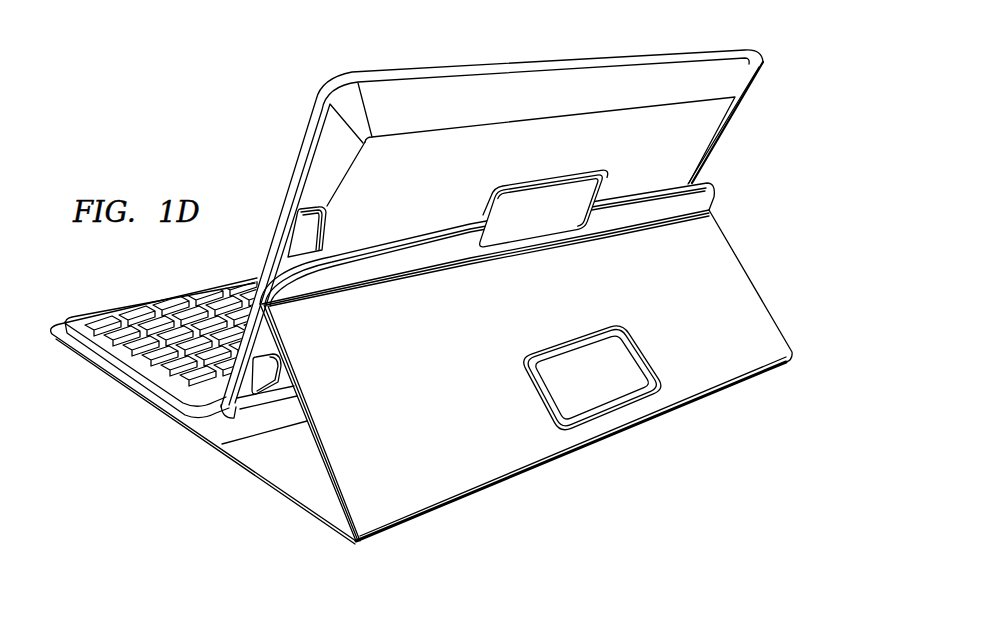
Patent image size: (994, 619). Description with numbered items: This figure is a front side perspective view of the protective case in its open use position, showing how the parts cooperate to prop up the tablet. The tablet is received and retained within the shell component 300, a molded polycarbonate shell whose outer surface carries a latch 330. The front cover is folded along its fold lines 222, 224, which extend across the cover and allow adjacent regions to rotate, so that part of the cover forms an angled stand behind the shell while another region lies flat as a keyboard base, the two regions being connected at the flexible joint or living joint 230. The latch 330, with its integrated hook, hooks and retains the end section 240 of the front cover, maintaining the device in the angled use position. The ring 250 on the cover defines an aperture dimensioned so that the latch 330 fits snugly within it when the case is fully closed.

The shell component 300 is at (662, 80).
The latch 330 is at (545, 210).
The end section 240 is at (660, 187).
The fold line 222 is at (667, 217).
The fold line 224 is at (437, 522).
The ring 250 is at (636, 418).
The flexible joint or living joint 230 is at (258, 441).